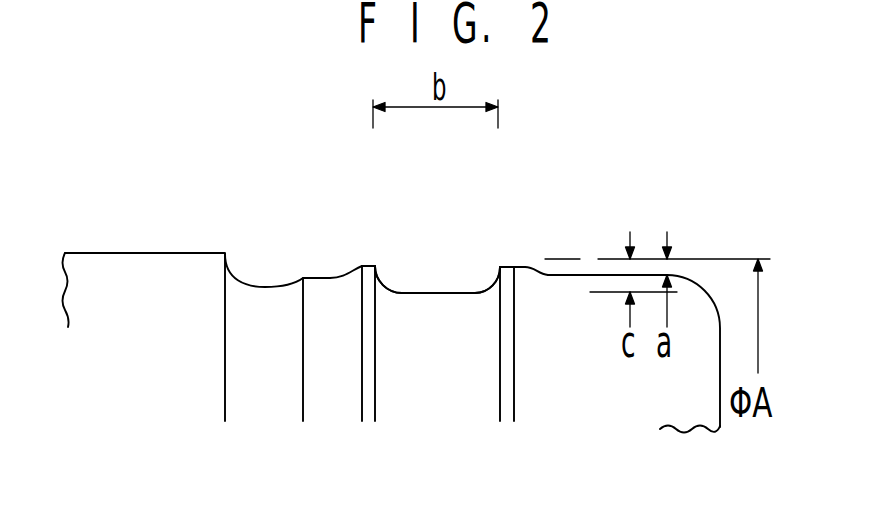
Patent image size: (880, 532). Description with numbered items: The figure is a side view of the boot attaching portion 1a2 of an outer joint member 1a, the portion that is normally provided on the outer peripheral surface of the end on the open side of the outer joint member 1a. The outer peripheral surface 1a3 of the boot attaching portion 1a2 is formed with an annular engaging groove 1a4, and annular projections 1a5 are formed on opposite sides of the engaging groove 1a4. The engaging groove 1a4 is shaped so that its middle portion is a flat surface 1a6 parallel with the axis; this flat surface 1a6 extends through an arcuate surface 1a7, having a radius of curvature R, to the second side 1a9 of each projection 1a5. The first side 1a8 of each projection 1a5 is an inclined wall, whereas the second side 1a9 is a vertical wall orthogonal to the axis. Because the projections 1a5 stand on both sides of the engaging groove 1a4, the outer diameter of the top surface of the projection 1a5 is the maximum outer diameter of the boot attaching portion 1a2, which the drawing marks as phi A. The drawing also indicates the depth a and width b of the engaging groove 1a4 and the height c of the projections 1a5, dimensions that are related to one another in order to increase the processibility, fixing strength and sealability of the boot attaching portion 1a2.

The outer joint member 1a is at (112, 270).
The boot attaching portion 1a2 is at (318, 158).
The outer peripheral surface 1a3 is at (578, 275).
The engaging groove 1a4 is at (440, 283).
The projection 1a5 is at (367, 263).
The flat surface 1a6 is at (412, 293).
The arcuate surface 1a7 is at (400, 296).
The first side 1a8 is at (351, 275).
The second side 1a9 is at (378, 264).